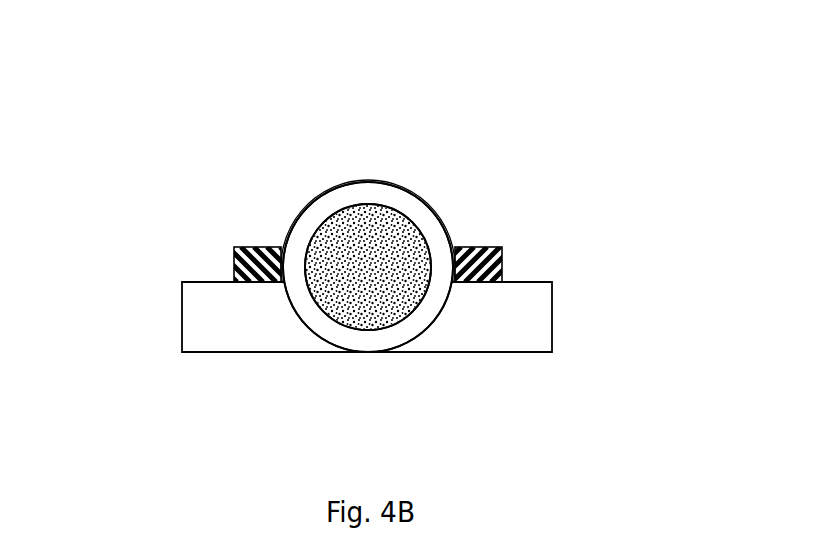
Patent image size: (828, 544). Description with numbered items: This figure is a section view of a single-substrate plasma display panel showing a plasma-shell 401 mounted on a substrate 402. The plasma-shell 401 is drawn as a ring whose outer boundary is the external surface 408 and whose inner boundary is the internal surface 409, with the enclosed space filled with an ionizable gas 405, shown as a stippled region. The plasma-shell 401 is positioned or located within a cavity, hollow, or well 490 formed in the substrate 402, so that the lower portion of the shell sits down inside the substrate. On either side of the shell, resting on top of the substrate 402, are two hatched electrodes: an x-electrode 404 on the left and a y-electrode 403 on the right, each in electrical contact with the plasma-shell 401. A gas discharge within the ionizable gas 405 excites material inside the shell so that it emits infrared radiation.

The plasma-shell 401 is at (333, 199).
The substrate 402 is at (228, 353).
The electrode 403 is at (502, 258).
The electrode 404 is at (243, 247).
The ionizable gas 405 is at (370, 240).
The external surface 408 is at (367, 198).
The internal surface 409 is at (368, 331).
The cavity, hollow, or well 490 is at (288, 313).